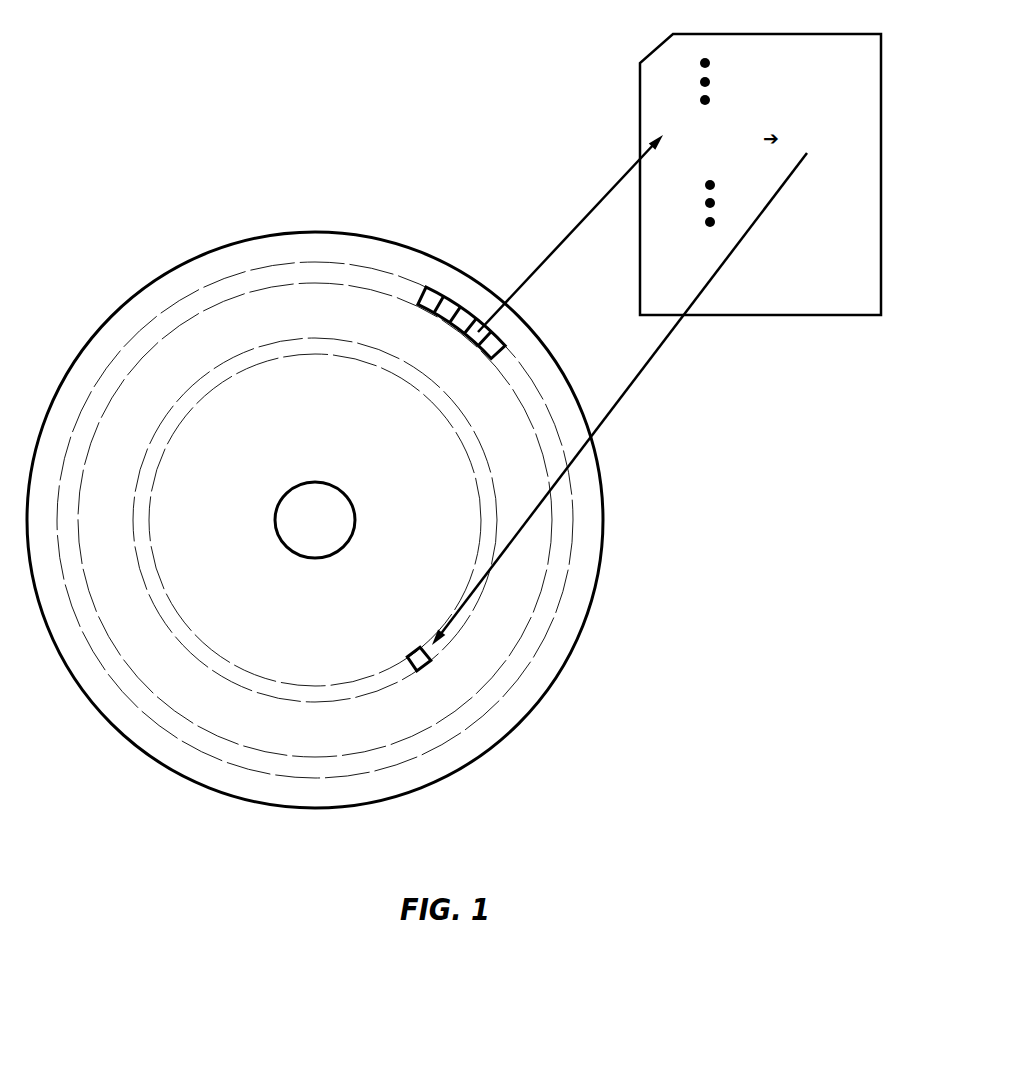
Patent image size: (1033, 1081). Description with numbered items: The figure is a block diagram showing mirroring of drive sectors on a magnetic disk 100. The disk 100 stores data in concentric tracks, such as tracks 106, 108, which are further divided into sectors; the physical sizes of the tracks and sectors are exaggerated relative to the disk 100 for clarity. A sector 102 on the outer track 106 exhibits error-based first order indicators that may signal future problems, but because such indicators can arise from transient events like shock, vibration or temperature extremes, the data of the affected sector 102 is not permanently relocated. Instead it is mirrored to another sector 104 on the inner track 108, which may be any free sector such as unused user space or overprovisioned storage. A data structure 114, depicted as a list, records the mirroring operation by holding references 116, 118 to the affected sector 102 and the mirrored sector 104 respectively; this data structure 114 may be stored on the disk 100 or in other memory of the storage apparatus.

The magnetic disk 100 is at (145, 292).
The affected sector 102 is at (476, 342).
The mirrored sector 104 is at (420, 653).
The track 106 is at (313, 275).
The track 108 is at (348, 350).
The data structure 114 is at (802, 33).
The reference to affected sector 116 is at (711, 148).
The reference to mirrored sector 118 is at (822, 148).